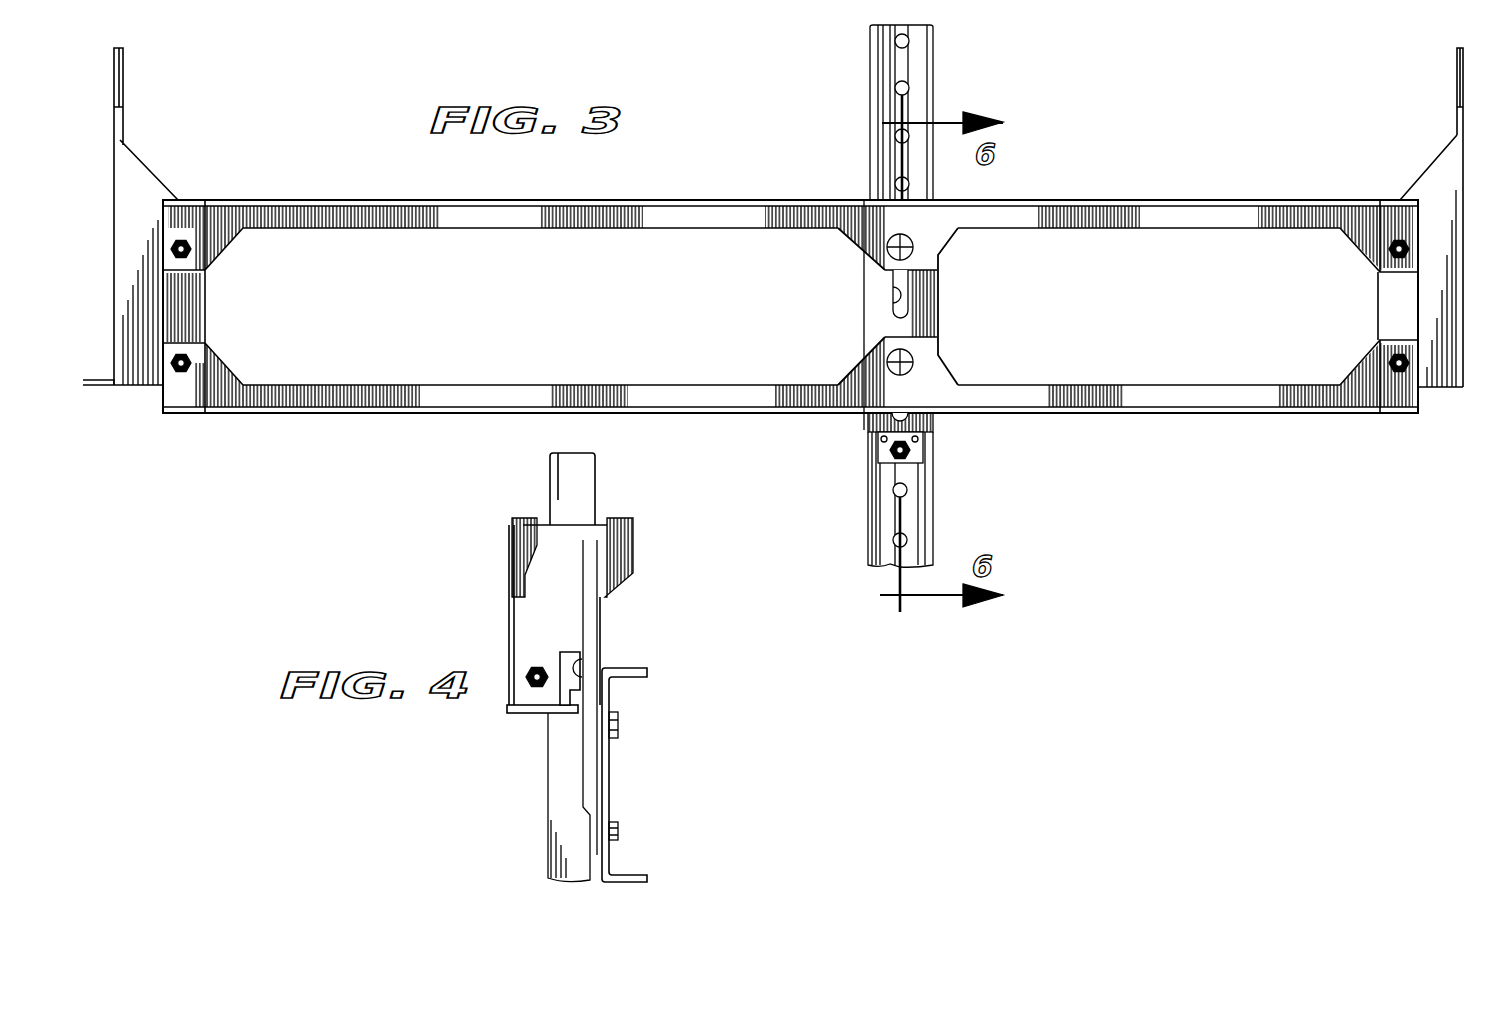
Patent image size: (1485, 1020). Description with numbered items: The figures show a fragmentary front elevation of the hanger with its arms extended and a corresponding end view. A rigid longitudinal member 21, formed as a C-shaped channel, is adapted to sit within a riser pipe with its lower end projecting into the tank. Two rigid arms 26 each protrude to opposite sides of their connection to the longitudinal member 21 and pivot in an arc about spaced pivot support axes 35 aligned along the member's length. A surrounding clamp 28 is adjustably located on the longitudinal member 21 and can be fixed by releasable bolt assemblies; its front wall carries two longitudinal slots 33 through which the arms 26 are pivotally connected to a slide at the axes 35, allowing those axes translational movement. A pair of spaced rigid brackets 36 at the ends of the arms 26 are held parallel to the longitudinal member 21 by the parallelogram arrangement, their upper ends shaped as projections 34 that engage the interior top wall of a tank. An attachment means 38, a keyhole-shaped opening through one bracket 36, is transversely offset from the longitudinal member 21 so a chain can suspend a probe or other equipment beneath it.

In FIG. 3, the longitudinal member 21 is at (915, 62).
In FIG. 4, the longitudinal member 21 is at (573, 483).
In FIG. 3, the arms 26 is at (711, 215).
In FIG. 3, the clamp 28 is at (870, 333).
In FIG. 3, the longitudinal slots 33 is at (893, 310).
In FIG. 4, the projections 34 is at (513, 518).
In FIG. 3, the pivot support axes 35 is at (912, 254).
In FIG. 3, the brackets 36 is at (137, 177).
In FIG. 4, the brackets 36 is at (528, 588).
In FIG. 4, the attachment means 38 is at (575, 653).